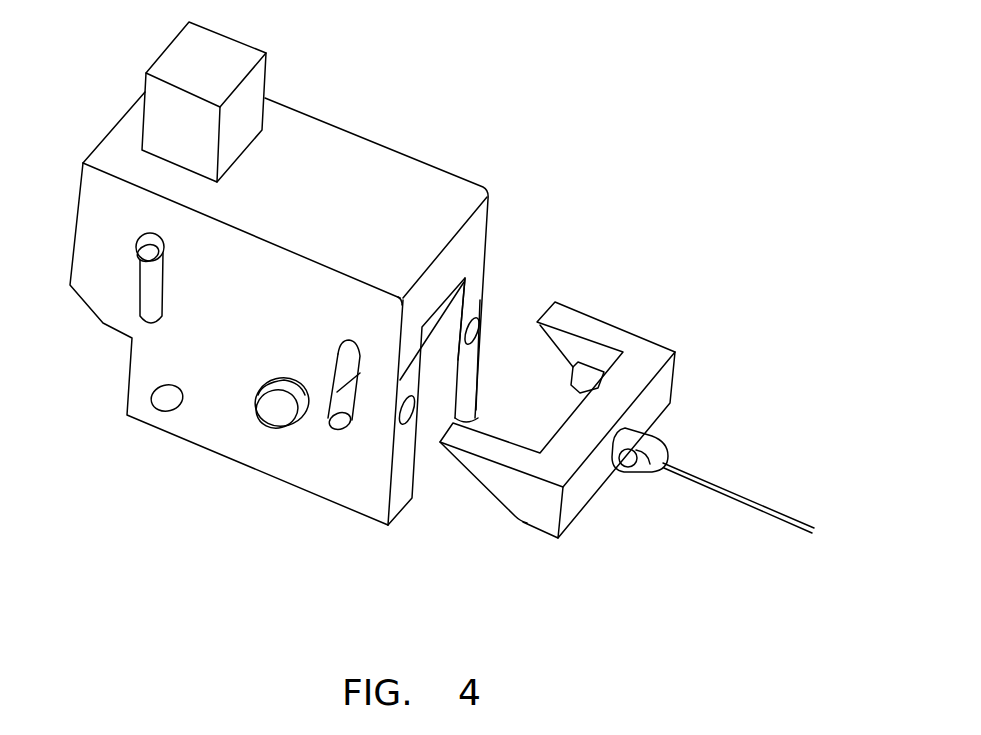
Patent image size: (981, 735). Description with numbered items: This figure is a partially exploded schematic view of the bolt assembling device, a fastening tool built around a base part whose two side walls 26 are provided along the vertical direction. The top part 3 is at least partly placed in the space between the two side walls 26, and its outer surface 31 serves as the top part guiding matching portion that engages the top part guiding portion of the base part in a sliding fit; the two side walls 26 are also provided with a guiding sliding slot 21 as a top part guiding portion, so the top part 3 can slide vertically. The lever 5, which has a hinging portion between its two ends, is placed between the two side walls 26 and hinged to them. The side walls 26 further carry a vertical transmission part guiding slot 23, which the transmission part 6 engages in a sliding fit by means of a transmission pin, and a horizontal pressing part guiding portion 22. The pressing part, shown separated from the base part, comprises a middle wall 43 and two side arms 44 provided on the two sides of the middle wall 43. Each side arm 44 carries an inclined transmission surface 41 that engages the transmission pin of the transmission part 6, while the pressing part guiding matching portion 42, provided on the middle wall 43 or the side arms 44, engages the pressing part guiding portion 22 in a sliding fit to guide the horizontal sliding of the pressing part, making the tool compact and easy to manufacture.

The top part 3 is at (155, 102).
The outer surface of the top part 31 is at (153, 117).
The guiding sliding slot 21 is at (150, 297).
The lever 5 is at (280, 420).
The transmission part 6 is at (342, 428).
The transmission part guiding slot 23 is at (358, 373).
The side walls 26 is at (463, 300).
The pressing part guiding portion 22 is at (478, 323).
The inclined transmission surface 41 is at (485, 492).
The pressing part guiding matching portion 42 is at (588, 378).
The middle wall 43 is at (595, 475).
The side arms 44 is at (615, 333).